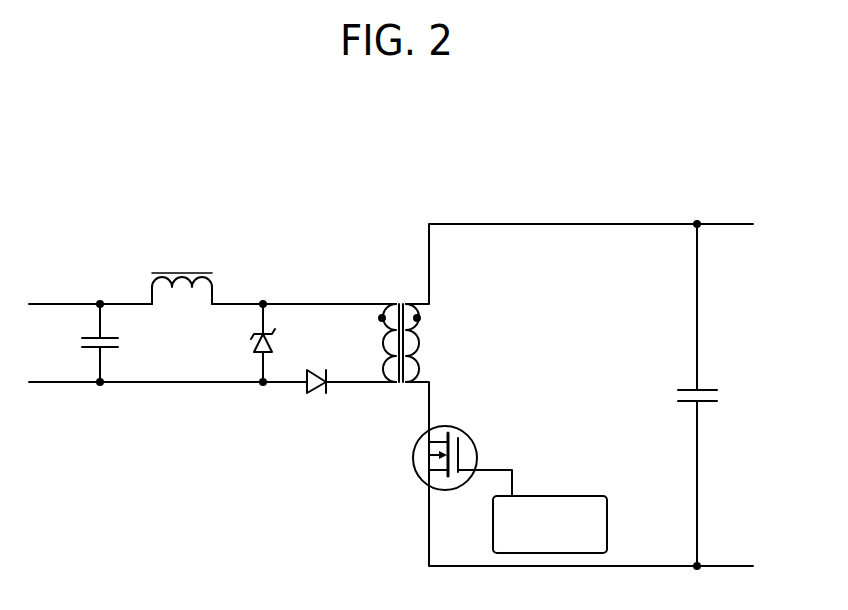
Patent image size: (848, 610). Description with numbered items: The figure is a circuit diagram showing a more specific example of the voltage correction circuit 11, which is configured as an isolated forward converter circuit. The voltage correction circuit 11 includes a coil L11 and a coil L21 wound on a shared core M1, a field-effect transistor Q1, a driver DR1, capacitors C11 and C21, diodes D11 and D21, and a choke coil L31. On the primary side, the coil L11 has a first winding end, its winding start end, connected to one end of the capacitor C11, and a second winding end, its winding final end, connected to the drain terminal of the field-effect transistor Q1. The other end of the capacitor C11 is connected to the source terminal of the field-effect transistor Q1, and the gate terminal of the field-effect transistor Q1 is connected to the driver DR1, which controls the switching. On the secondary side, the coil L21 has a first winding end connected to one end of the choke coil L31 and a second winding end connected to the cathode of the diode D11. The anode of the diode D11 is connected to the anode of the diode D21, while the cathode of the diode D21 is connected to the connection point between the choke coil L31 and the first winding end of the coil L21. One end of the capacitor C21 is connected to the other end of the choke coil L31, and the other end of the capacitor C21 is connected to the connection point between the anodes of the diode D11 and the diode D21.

The voltage correction circuit 11 is at (288, 215).
The choke coil L31 is at (182, 272).
The capacitor C21 is at (76, 343).
The diode D21 is at (240, 343).
The diode D11 is at (316, 394).
The core M1 is at (398, 358).
The coil L21 is at (366, 343).
The coil L11 is at (433, 343).
The field-effect transistor Q1 is at (450, 445).
The driver DR1 is at (585, 495).
The capacitor C11 is at (682, 395).